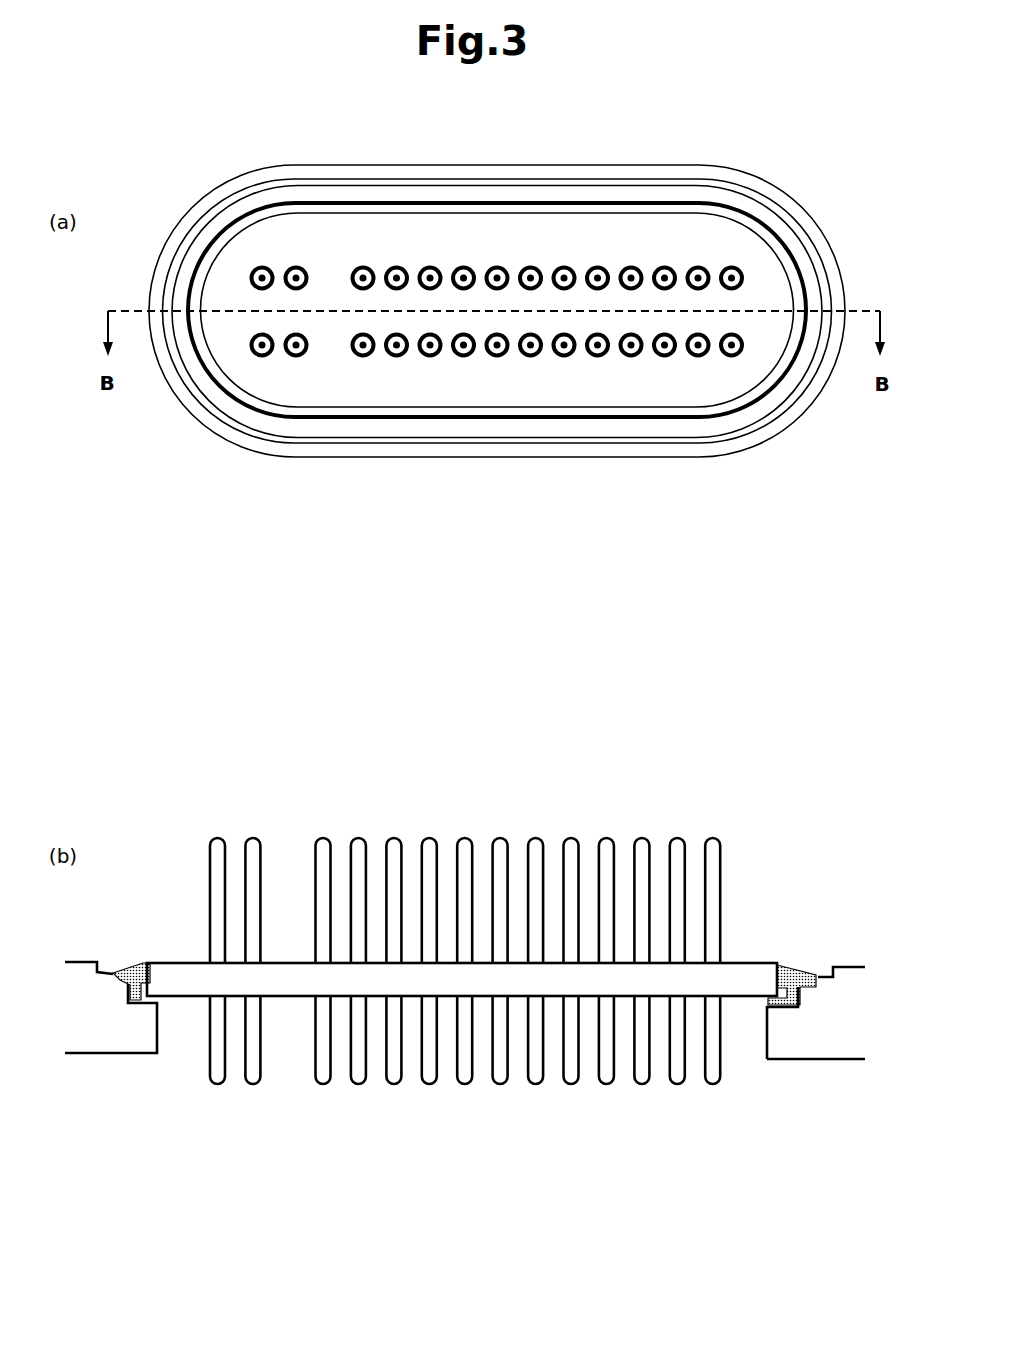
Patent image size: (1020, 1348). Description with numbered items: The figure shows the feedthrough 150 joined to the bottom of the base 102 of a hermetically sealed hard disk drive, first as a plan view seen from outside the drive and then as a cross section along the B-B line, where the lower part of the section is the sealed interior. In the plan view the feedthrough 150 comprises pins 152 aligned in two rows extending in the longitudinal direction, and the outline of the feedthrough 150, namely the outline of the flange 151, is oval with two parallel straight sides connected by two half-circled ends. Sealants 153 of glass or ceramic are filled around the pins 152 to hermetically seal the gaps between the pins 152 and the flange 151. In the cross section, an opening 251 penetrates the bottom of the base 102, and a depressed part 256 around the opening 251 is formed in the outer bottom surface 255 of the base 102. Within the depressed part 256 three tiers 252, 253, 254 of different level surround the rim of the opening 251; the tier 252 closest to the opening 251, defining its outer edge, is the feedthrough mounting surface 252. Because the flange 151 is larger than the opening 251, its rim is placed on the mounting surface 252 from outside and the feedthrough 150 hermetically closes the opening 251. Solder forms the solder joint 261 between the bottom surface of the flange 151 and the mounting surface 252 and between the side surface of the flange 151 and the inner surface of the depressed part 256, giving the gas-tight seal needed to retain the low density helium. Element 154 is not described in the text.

The base 102 is at (779, 520).
The feedthrough 150 is at (497, 378).
The flange 151 is at (327, 417).
The pins 152 is at (462, 356).
The sealants 153 is at (533, 356).
The seal member 154 is at (142, 962).
The opening 251 is at (766, 1043).
The mounting surface 252 is at (152, 1004).
The tier 253 is at (122, 986).
The tier 254 is at (101, 978).
The outer bottom surface 255 is at (838, 1061).
The depressed part 256 is at (115, 954).
The solder joint 261 is at (799, 966).